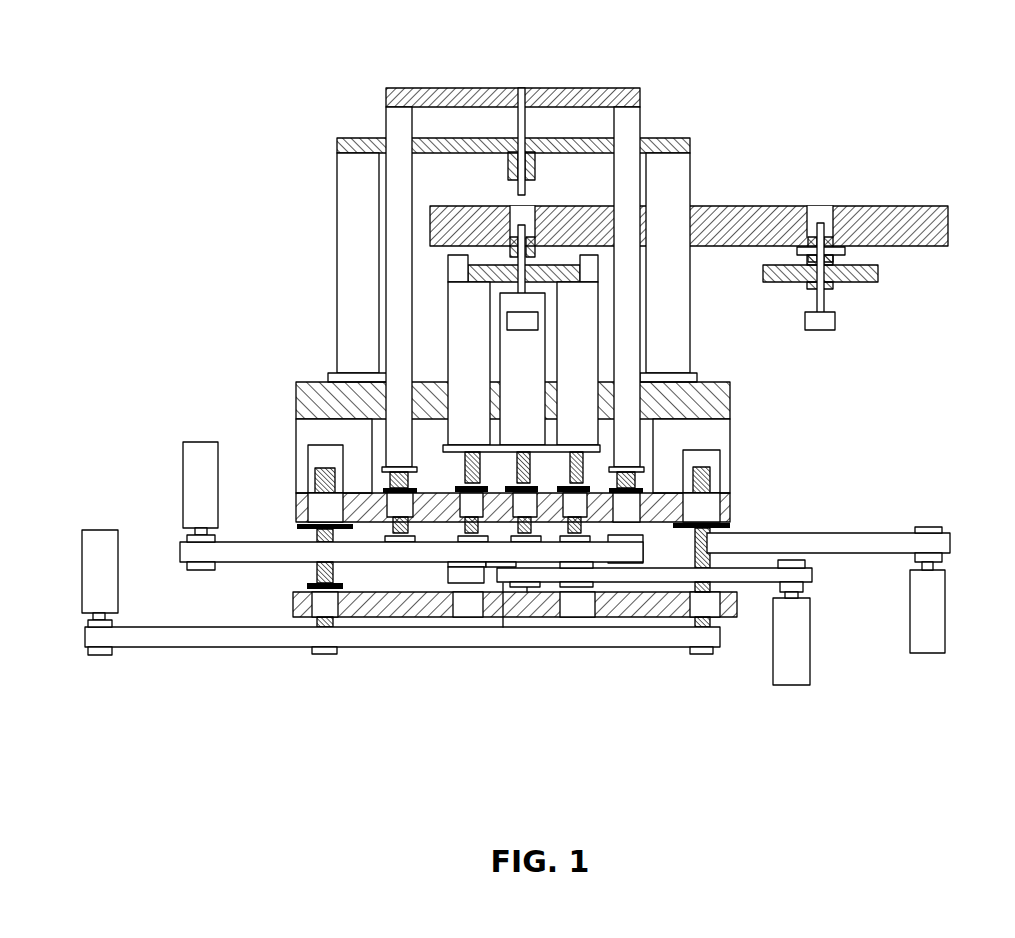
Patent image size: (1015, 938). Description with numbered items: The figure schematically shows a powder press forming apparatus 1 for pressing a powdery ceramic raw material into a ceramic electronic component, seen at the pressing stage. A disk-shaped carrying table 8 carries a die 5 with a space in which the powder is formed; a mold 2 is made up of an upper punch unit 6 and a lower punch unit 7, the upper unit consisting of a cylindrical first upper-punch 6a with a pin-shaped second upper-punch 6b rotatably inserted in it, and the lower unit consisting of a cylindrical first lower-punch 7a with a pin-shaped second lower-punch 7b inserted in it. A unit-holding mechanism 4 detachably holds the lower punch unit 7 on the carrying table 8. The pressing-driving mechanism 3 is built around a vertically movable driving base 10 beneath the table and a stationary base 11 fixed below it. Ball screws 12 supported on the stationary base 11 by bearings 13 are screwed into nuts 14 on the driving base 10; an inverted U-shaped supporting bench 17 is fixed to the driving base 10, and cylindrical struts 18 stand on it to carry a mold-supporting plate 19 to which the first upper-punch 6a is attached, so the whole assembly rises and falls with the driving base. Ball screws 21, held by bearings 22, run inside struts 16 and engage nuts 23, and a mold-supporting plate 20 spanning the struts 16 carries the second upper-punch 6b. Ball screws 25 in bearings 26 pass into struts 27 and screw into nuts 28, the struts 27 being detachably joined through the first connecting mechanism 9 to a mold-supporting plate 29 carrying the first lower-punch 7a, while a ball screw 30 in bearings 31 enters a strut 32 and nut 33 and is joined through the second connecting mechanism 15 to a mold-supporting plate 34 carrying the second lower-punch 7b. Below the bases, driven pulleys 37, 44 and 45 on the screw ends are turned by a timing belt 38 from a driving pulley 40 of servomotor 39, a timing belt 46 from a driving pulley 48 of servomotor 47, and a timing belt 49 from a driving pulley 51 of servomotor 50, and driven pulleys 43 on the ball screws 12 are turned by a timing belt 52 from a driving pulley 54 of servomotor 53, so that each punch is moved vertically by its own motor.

The powder press forming apparatus 1 is at (882, 80).
The mold 2 is at (506, 184).
The pressing-driving mechanism 3 is at (517, 620).
The unit-holding mechanism 4 is at (868, 251).
The die 5 is at (517, 204).
The upper punch unit 6 is at (539, 97).
The first upper-punch 6a is at (548, 185).
The second upper-punch 6b is at (530, 193).
The lower punch unit 7 is at (685, 157).
The first lower-punch 7a is at (595, 195).
The second lower-punch 7b is at (574, 195).
The carrying table 8 is at (912, 199).
The first connecting mechanism 9 is at (440, 268).
The driving base 10 is at (296, 497).
The stationary base 11 is at (415, 617).
The ball screw 12 is at (314, 564).
The bearing 13 is at (318, 606).
The nut 14 is at (296, 520).
The second connecting mechanism 15 is at (600, 282).
The strut 16 is at (386, 112).
The supporting bench 17 is at (296, 395).
The strut 18 is at (337, 190).
The mold-supporting plate 19 is at (690, 138).
The mold-supporting plate 20 is at (433, 88).
The ball screw 21 is at (417, 480).
The bearing 22 is at (396, 516).
The nut 23 is at (345, 474).
The ball screw 25 is at (470, 585).
The bearing 26 is at (470, 510).
The strut 27 is at (448, 372).
The nut 28 is at (455, 453).
The mold-supporting plate 29 is at (860, 285).
The ball screw 30 is at (516, 472).
The bearing 31 is at (527, 584).
The strut 32 is at (546, 352).
The nut 33 is at (531, 472).
The mold-supporting plate 34 is at (546, 325).
The driven pulley 37 is at (392, 600).
The timing belt 38 is at (242, 562).
The servomotor 39 is at (183, 470).
The driving pulley 40 is at (205, 570).
The driven pulley 43 is at (322, 654).
The driven pulley 44 is at (480, 590).
The driven pulley 45 is at (503, 585).
The timing belt 46 is at (756, 584).
The servomotor 47 is at (810, 630).
The driving pulley 48 is at (806, 584).
The timing belt 49 is at (878, 533).
The servomotor 50 is at (946, 611).
The driving pulley 51 is at (930, 527).
The timing belt 52 is at (255, 647).
The servomotor 53 is at (84, 530).
The driving pulley 54 is at (103, 655).